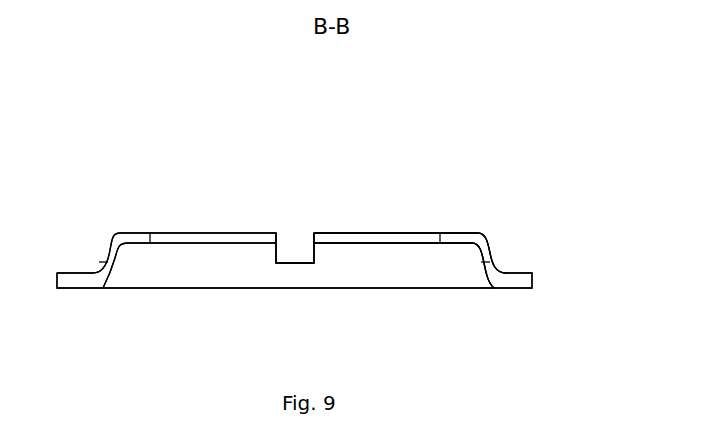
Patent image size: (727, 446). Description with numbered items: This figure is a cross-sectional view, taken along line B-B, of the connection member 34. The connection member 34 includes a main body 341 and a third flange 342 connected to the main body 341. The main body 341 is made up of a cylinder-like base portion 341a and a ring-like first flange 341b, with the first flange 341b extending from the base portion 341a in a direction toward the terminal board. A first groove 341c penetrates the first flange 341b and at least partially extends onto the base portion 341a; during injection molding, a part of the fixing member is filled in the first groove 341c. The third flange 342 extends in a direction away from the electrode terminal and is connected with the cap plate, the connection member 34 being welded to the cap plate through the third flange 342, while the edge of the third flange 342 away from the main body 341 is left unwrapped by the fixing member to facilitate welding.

The connection member 34 is at (208, 172).
The main body 341 is at (570, 172).
The base portion 341a is at (485, 257).
The first flange 341b is at (397, 243).
The first groove 341c is at (292, 255).
The third flange 342 is at (512, 280).